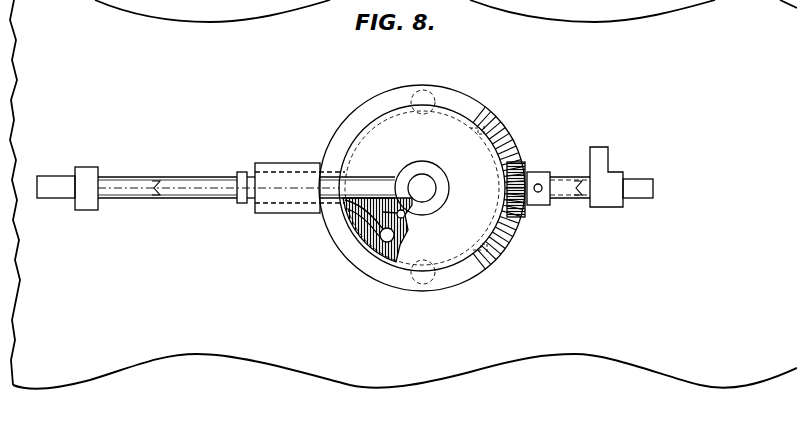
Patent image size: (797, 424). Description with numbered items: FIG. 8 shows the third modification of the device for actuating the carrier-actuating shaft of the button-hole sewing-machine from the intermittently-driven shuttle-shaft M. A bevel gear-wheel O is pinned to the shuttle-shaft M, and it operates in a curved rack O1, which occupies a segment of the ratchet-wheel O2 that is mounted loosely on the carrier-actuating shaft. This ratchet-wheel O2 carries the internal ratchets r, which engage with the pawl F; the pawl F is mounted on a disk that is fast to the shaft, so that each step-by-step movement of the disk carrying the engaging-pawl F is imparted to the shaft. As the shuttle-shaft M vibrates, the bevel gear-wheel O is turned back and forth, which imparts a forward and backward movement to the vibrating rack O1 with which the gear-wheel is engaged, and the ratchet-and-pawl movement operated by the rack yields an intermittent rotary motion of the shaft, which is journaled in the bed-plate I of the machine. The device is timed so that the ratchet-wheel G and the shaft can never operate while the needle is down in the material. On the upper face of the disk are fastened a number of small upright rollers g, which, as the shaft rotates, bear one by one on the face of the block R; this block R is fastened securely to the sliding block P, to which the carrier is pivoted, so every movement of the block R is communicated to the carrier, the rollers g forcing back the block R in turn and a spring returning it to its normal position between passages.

The shuttle-shaft M is at (188, 188).
The sliding block P is at (243, 204).
The block R is at (297, 172).
The ratchet-wheel O2 is at (452, 106).
The ratchet-wheel G is at (422, 188).
The small upright rollers g is at (470, 134).
The curved rack O1 is at (497, 136).
The bevel gear-wheel O is at (524, 170).
The internal ratchets r is at (355, 234).
The pawl F is at (323, 216).
The bed-plate I is at (606, 68).